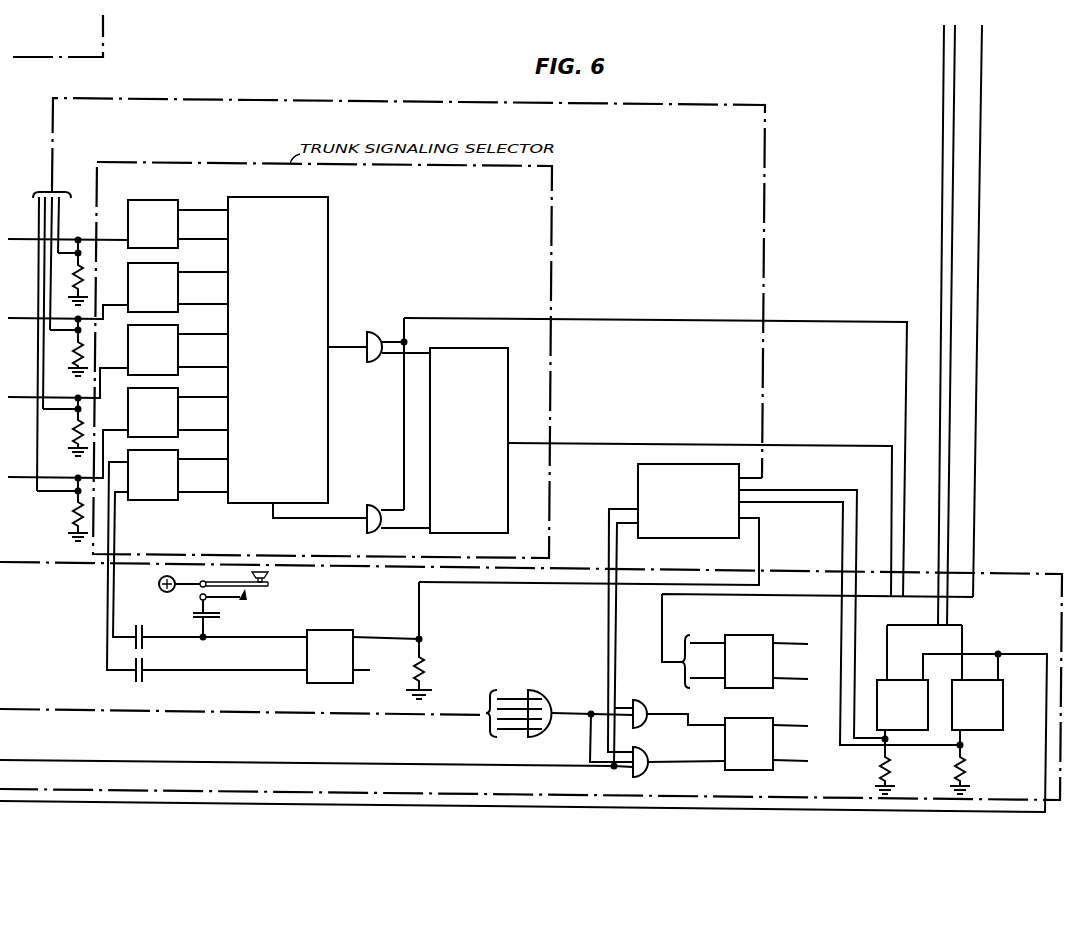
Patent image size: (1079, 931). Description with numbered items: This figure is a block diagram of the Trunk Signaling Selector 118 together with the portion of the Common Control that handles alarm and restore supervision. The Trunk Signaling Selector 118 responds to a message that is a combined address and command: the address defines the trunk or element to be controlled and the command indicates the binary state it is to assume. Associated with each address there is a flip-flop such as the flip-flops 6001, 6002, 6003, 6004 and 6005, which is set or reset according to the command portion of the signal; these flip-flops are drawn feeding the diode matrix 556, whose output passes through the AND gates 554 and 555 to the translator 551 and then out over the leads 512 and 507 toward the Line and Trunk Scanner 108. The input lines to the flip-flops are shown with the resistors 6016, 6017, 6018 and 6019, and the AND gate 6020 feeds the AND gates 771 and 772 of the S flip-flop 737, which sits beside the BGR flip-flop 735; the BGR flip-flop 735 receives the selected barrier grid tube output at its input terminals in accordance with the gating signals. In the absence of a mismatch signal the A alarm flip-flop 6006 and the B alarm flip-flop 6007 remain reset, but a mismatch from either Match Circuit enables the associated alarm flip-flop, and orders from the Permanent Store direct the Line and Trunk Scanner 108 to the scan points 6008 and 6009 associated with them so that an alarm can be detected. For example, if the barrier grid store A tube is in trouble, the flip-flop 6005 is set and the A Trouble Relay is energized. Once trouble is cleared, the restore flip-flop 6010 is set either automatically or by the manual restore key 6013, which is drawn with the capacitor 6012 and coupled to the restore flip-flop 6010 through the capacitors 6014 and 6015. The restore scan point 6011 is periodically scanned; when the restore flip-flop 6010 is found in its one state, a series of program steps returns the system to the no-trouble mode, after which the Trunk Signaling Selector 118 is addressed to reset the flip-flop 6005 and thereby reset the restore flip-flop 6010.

The flip-flop 6001 is at (160, 451).
The flip-flop 6002 is at (160, 389).
The flip-flop 6003 is at (160, 326).
The flip-flop 6004 is at (160, 264).
The flip-flop 6005 is at (160, 201).
The A alarm flip-flop 6006 is at (1003, 679).
The B alarm flip-flop 6007 is at (905, 730).
The scan point 6008 is at (965, 748).
The scan point 6009 is at (882, 742).
The restore flip-flop 6010 is at (323, 683).
The restore scan point 6011 is at (422, 640).
The capacitor 6012 is at (221, 615).
The manual restore key 6013 is at (247, 591).
The capacitor 6014 is at (136, 625).
The capacitor 6015 is at (136, 683).
The resistor 6016 is at (83, 266).
The resistor 6017 is at (72, 356).
The resistor 6018 is at (72, 436).
The resistor 6019 is at (70, 512).
The AND gate 6020 is at (538, 689).
The AND gate 554 is at (372, 328).
The AND gate 555 is at (371, 502).
The diode matrix 556 is at (328, 232).
The trunk signaling selector translator 551 is at (465, 348).
The lead 512 is at (622, 319).
The lead 507 is at (594, 446).
The Trunk Signaling Selector 118 is at (552, 230).
The Line and Trunk Scanner 108 is at (665, 538).
The BGR flip-flop 735 is at (748, 635).
The S flip-flop 737 is at (742, 770).
The AND gate 771 is at (641, 699).
The AND gate 772 is at (647, 749).